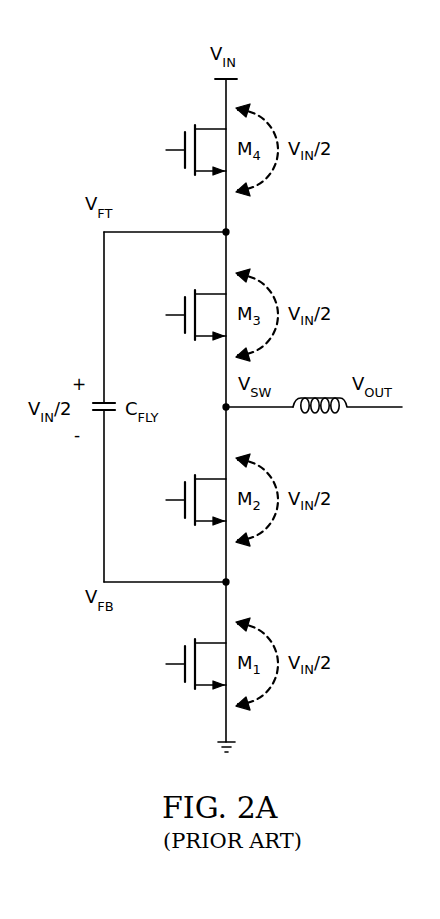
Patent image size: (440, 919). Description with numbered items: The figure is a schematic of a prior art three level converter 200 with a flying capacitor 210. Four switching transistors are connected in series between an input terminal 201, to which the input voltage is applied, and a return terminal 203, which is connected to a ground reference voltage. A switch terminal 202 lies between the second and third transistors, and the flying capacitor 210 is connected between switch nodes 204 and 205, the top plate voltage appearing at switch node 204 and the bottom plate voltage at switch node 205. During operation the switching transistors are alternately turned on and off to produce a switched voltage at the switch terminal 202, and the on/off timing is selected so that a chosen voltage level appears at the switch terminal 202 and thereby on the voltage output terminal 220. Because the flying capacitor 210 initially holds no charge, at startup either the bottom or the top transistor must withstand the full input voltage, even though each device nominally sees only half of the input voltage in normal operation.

The three level converter 200 is at (118, 72).
The input terminal 201 is at (229, 80).
The switch terminal 202 is at (223, 410).
The return terminal 203 is at (237, 748).
The switch node 204 is at (222, 228).
The switch node 205 is at (223, 588).
The flying capacitor 210 is at (110, 400).
The voltage output terminal 220 is at (375, 410).